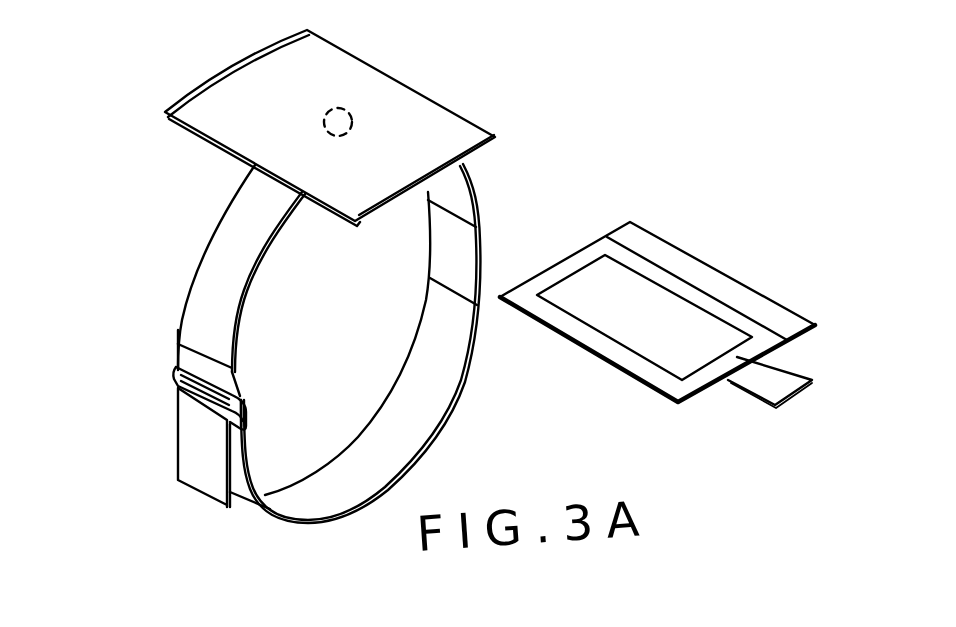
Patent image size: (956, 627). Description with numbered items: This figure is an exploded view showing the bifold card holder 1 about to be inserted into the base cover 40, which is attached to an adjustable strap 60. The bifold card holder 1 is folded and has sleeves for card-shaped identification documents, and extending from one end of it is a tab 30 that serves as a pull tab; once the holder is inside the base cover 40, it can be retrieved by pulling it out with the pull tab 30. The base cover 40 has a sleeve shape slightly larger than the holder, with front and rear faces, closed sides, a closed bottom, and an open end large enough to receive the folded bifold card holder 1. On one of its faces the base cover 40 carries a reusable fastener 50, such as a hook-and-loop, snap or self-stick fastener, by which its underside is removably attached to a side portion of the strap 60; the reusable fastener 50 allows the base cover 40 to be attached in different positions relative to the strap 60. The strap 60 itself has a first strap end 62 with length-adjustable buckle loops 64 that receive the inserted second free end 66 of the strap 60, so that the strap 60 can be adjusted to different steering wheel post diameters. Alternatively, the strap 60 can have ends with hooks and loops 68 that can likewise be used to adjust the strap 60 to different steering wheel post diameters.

The bifold card holder 1 is at (747, 224).
The tab 30 is at (820, 395).
The base cover 40 is at (452, 52).
The reusable fastener 50 is at (332, 116).
The adjustable strap 60 is at (108, 320).
The first strap end 62 is at (180, 353).
The length adjustable buckle loops 64 is at (242, 402).
The second free end 66 is at (191, 461).
The hooks and loops 68 is at (220, 298).